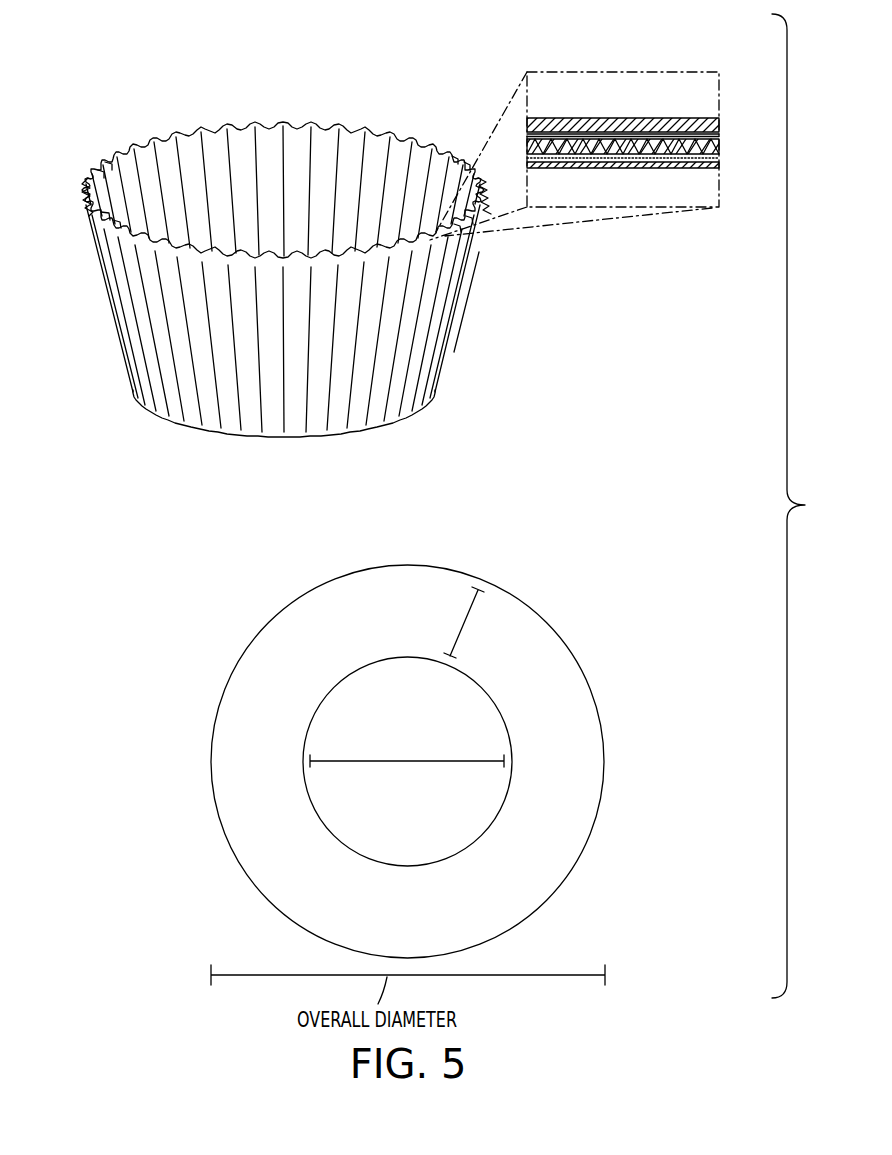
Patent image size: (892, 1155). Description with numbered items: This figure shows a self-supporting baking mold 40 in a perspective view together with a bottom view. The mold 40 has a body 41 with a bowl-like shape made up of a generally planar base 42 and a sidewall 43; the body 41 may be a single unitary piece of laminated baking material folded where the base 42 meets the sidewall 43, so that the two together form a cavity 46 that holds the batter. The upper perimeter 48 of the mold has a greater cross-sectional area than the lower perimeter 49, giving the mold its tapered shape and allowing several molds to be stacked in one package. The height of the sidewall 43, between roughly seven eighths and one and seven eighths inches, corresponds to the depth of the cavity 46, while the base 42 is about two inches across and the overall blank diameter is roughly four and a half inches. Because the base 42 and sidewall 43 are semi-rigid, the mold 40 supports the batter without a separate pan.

The self-supporting baking mold 40 is at (115, 86).
The body 41 is at (84, 302).
The base 42 is at (257, 458).
The sidewall 43 is at (470, 302).
The cavity 46 is at (318, 146).
The upper perimeter 48 is at (82, 170).
The lower perimeter 49 is at (118, 380).